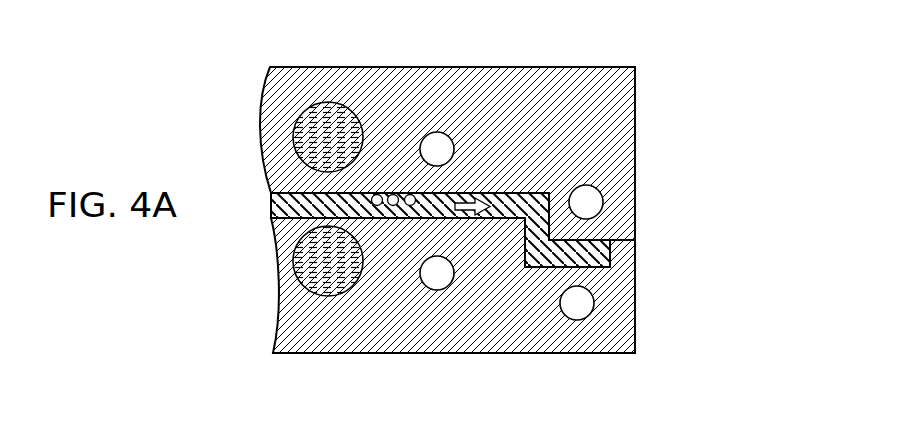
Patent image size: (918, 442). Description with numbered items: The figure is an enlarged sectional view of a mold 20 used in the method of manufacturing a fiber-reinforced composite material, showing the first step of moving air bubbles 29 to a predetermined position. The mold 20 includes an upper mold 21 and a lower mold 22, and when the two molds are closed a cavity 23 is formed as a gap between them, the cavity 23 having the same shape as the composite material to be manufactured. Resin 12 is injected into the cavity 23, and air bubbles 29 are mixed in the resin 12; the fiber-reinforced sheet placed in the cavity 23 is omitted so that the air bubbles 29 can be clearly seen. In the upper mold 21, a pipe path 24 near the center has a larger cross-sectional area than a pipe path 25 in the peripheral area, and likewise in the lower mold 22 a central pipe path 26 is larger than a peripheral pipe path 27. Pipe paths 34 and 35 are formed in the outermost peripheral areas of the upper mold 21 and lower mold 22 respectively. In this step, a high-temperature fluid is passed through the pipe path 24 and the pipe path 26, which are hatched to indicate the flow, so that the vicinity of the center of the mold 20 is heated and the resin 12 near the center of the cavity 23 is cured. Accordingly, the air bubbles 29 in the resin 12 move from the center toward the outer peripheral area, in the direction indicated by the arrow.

The mold 20 is at (698, 58).
The upper mold 21 is at (635, 101).
The lower mold 22 is at (635, 313).
The resin 12 is at (541, 193).
The cavity 23 is at (600, 280).
The pipe path 24 is at (328, 102).
The pipe path 25 is at (437, 132).
The pipe path 26 is at (330, 296).
The pipe path 27 is at (437, 290).
The air bubbles 29 is at (393, 194).
The pipe path 34 is at (586, 185).
The pipe path 35 is at (578, 320).